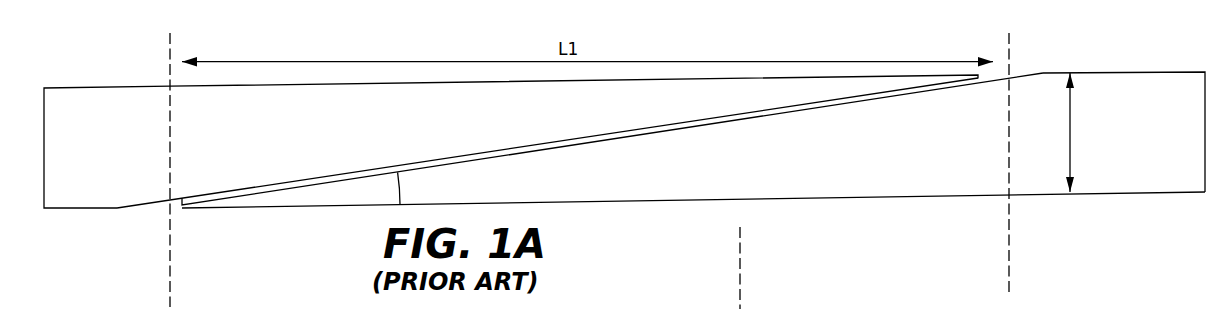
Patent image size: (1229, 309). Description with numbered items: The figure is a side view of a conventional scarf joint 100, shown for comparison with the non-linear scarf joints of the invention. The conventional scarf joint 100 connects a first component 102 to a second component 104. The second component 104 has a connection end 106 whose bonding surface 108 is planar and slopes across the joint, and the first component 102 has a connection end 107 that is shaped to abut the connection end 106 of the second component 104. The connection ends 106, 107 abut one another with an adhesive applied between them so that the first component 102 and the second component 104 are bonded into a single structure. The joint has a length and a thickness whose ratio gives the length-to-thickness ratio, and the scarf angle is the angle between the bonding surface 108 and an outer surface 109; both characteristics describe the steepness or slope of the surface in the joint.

The conventional scarf joint 100 is at (1037, 50).
The first component 102 is at (122, 105).
The second component 104 is at (1163, 88).
The connection end 106 is at (693, 140).
The connection end 107 is at (574, 101).
The bonding surface 108 is at (719, 130).
The outer surface 109 is at (578, 212).